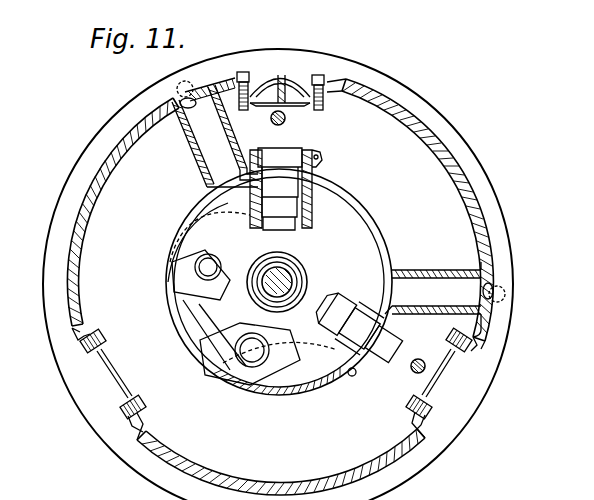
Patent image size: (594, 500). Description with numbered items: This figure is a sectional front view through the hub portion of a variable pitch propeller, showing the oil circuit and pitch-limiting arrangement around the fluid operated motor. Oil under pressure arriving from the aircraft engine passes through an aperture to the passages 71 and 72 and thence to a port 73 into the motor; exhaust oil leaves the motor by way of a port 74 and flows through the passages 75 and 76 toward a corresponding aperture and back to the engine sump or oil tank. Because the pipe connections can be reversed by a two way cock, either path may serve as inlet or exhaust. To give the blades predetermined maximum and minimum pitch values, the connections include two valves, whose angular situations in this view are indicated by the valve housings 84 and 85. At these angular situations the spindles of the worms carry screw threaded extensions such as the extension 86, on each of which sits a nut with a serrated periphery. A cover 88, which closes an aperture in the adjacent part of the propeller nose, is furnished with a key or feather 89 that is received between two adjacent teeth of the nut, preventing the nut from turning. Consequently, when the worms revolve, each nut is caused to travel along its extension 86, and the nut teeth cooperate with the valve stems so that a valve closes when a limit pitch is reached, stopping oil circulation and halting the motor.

The passage 71 is at (405, 295).
The passage 72 is at (290, 390).
The port 73 is at (252, 356).
The port 74 is at (200, 266).
The passage 75 is at (217, 200).
The passage 76 is at (205, 148).
The valve housing 84 is at (318, 186).
The valve housing 85 is at (355, 372).
The screw threaded extension 86 is at (288, 118).
The cover 88 is at (300, 78).
The key or feather 89 is at (268, 106).